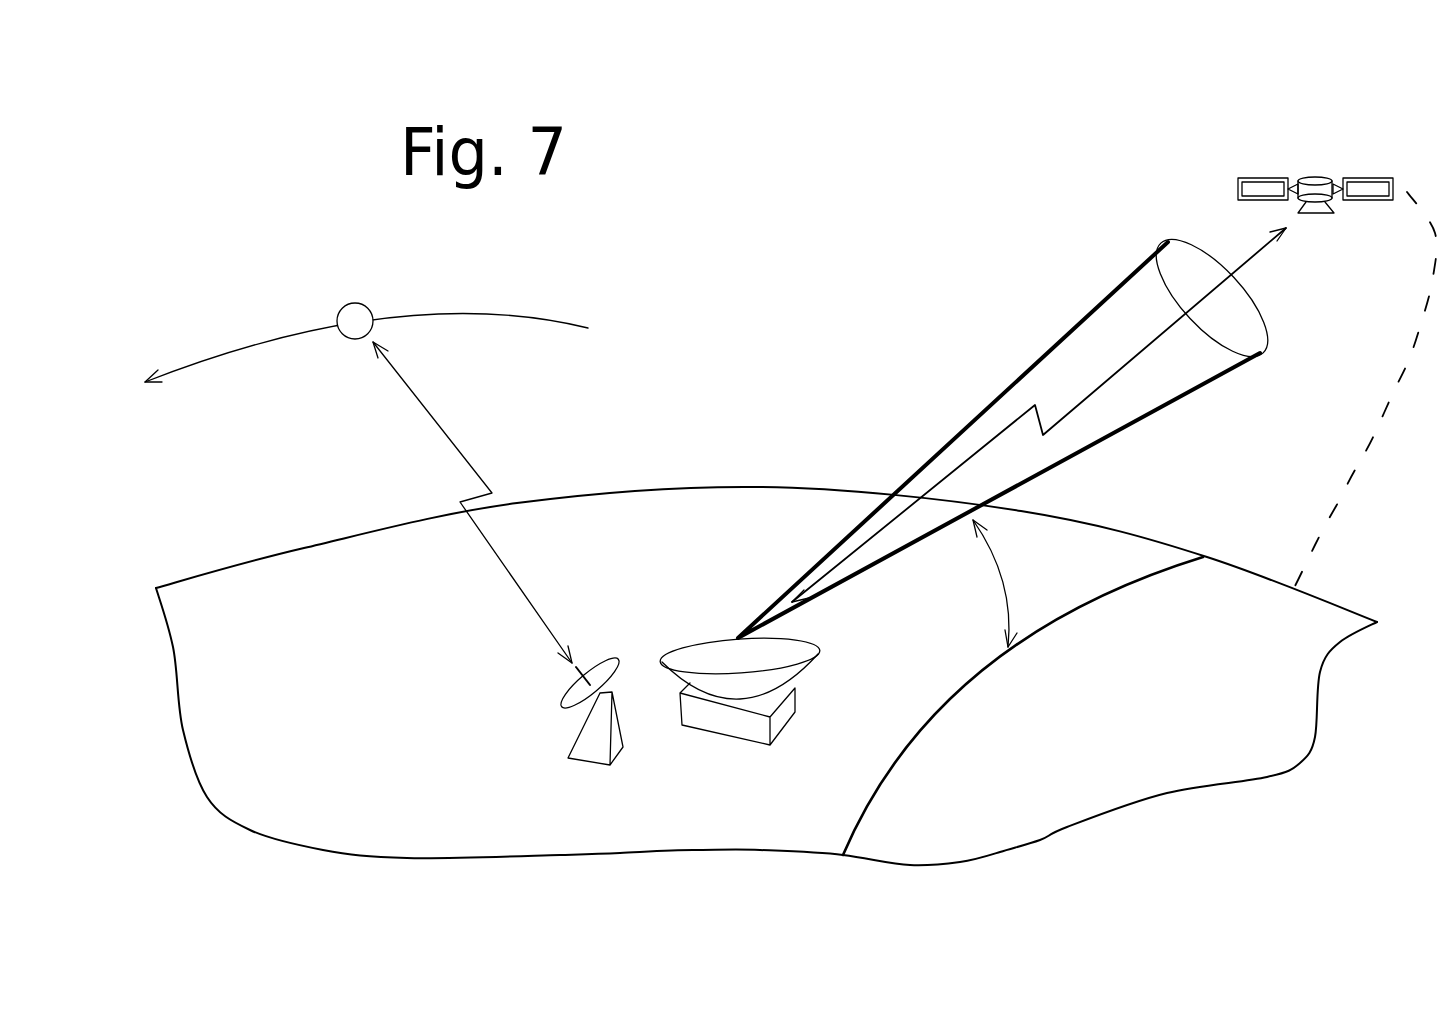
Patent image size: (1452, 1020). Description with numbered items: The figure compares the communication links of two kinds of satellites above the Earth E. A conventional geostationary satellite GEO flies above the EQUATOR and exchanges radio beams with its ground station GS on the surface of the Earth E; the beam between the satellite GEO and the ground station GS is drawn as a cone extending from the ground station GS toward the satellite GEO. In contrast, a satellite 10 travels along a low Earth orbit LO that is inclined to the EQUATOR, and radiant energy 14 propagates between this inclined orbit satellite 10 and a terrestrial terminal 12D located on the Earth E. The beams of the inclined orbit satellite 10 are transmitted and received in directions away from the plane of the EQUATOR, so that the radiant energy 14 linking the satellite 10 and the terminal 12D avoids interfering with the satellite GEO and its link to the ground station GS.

The satellite in an orbit inclined to the Equator 10 is at (356, 303).
The radiant energy 14 is at (526, 601).
The terrestrial terminal 12D is at (602, 768).
The ground station GS is at (737, 742).
The satellite in Equatorial orbit GEO is at (1238, 183).
The low Earth orbit LO is at (231, 350).
The Earth E is at (288, 555).
The Equator EQUATOR is at (1023, 706).